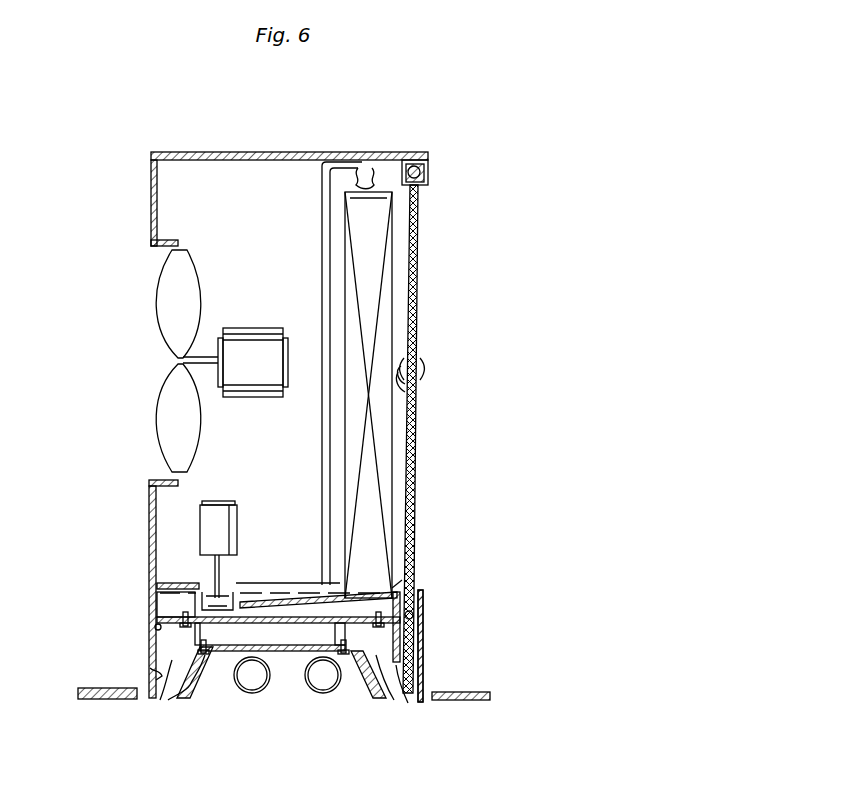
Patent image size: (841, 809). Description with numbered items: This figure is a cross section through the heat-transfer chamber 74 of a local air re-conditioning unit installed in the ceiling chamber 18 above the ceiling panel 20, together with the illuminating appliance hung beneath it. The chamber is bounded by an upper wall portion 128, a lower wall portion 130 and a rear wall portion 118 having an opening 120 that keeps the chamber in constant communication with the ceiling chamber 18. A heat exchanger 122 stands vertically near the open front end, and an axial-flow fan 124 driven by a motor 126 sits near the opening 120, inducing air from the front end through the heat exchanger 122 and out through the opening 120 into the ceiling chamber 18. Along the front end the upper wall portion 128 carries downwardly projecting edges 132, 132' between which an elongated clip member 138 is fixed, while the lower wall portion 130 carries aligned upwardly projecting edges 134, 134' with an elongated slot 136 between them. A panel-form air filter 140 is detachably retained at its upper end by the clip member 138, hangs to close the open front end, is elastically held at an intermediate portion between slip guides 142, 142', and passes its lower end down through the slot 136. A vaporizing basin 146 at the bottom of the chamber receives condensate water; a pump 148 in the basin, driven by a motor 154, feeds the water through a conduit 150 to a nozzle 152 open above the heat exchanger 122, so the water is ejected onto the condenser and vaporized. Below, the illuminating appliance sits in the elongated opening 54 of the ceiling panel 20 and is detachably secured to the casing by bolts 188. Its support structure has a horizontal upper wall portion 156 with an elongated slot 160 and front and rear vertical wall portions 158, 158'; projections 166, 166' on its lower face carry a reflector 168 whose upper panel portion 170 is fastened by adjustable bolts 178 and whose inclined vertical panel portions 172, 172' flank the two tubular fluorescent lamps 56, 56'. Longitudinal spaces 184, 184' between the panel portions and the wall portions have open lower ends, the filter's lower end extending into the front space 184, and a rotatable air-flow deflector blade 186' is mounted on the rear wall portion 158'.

The upper wall portion 128 is at (226, 152).
The rear wall portion 118 is at (151, 205).
The opening 120 is at (155, 247).
The heat-transfer chamber 74 is at (268, 216).
The ceiling chamber 18 is at (118, 371).
The axial-flow fan 124 is at (200, 290).
The motor 126 is at (265, 328).
The conduit 150 is at (322, 446).
The nozzle 152 is at (366, 166).
The heat exchanger 122 is at (344, 578).
The edge 132' is at (404, 138).
The clip member 138 is at (420, 162).
The edge 132 is at (446, 177).
The air filter 140 is at (418, 300).
The slip guide 142 is at (436, 367).
The slip guide 142' is at (437, 397).
The vaporizing basin 146 is at (182, 570).
The motor 154 is at (237, 516).
The pump 148 is at (235, 592).
The lower wall portion 130 is at (167, 608).
The elongated slot 160 is at (157, 625).
The rear vertical wall portion 158' is at (123, 640).
The air-flow deflector blade 186' is at (125, 672).
The bolts 188 is at (444, 674).
The projection 166' is at (228, 633).
The projection 166 is at (272, 636).
The upper panel portion 170 is at (290, 651).
The tubular fluorescent lamp 56' is at (252, 708).
The tubular fluorescent lamp 56 is at (321, 708).
The screws or bolts 178 is at (202, 690).
The rear vertical panel portion 172' is at (207, 683).
The reflector 168 is at (200, 700).
The front vertical panel portion 172 is at (359, 705).
The upper wall portion 156 is at (392, 690).
The elongated opening 54 is at (134, 700).
The longitudinal space 184' is at (150, 698).
The ceiling panel 20 is at (468, 700).
The longitudinal space 184 is at (425, 717).
The edge 134' is at (434, 558).
The edge 134 is at (449, 637).
The elongated slot 136 is at (418, 620).
The front vertical wall portion 158 is at (437, 627).